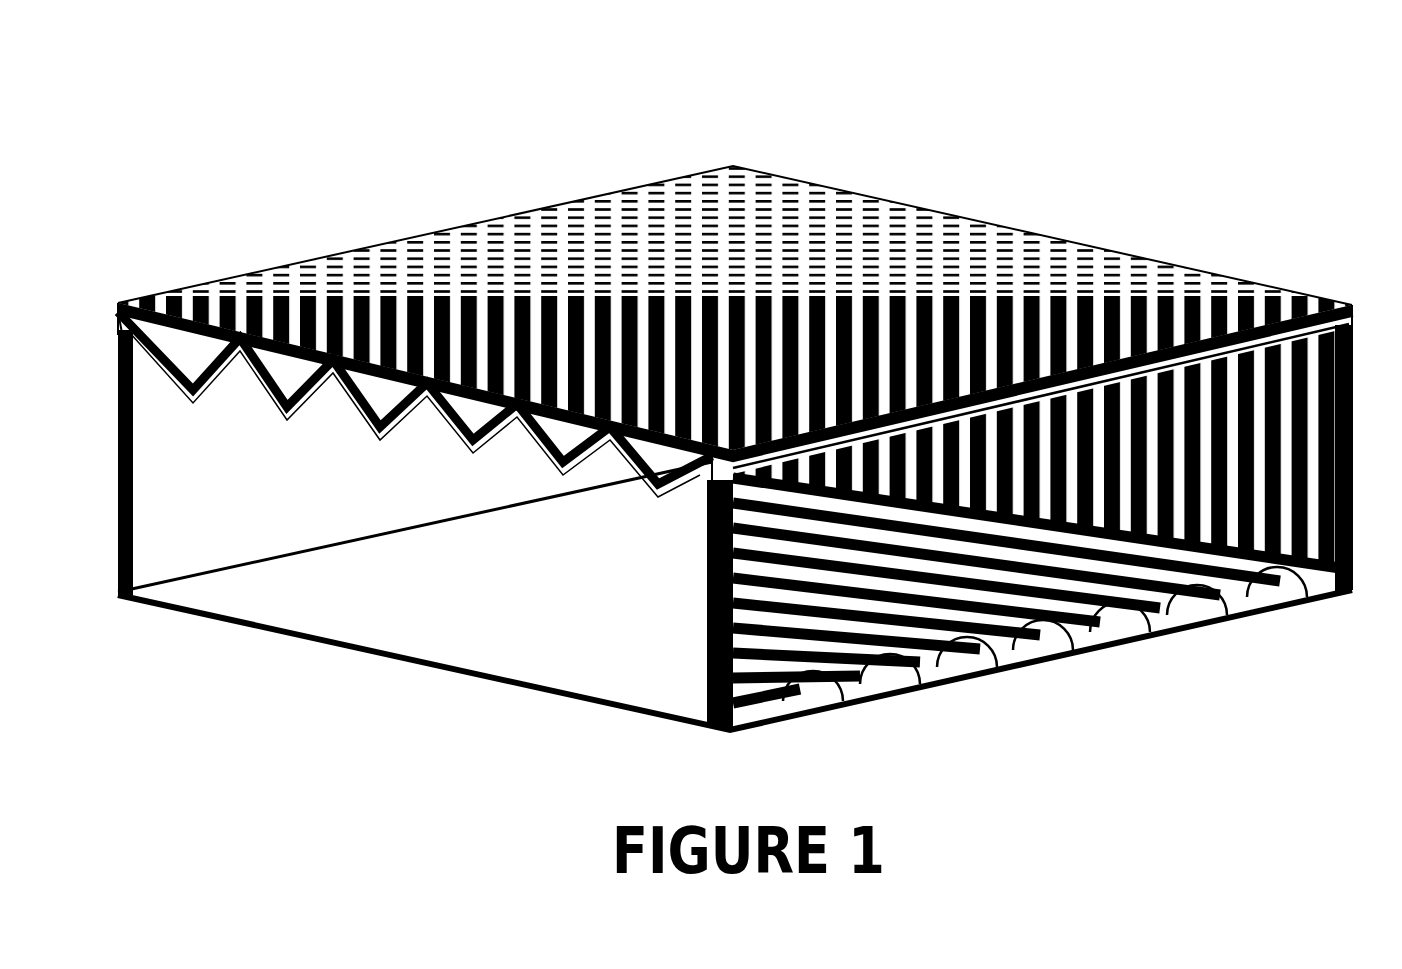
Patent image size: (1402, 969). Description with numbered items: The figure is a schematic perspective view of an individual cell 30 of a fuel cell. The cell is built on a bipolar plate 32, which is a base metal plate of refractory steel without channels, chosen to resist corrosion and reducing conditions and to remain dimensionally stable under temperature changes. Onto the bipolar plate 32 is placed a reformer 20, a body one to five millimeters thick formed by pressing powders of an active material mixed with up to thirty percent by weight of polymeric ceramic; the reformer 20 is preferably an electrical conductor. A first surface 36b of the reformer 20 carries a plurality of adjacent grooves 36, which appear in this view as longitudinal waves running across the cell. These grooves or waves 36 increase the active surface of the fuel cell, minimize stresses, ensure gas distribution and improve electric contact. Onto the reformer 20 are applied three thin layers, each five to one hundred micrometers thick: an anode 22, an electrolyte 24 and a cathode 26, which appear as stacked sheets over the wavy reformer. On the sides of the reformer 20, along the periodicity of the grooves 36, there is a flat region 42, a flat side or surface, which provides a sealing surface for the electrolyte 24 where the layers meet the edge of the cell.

The individual cell 30 is at (236, 150).
The bipolar plate 32 is at (649, 334).
The cathode 26 is at (1253, 327).
The electrolyte 24 is at (1305, 325).
The anode 22 is at (1352, 325).
The reformer 20 is at (397, 514).
The grooves 36 is at (305, 428).
The first surface 36b is at (193, 391).
The flat region 42 is at (122, 332).